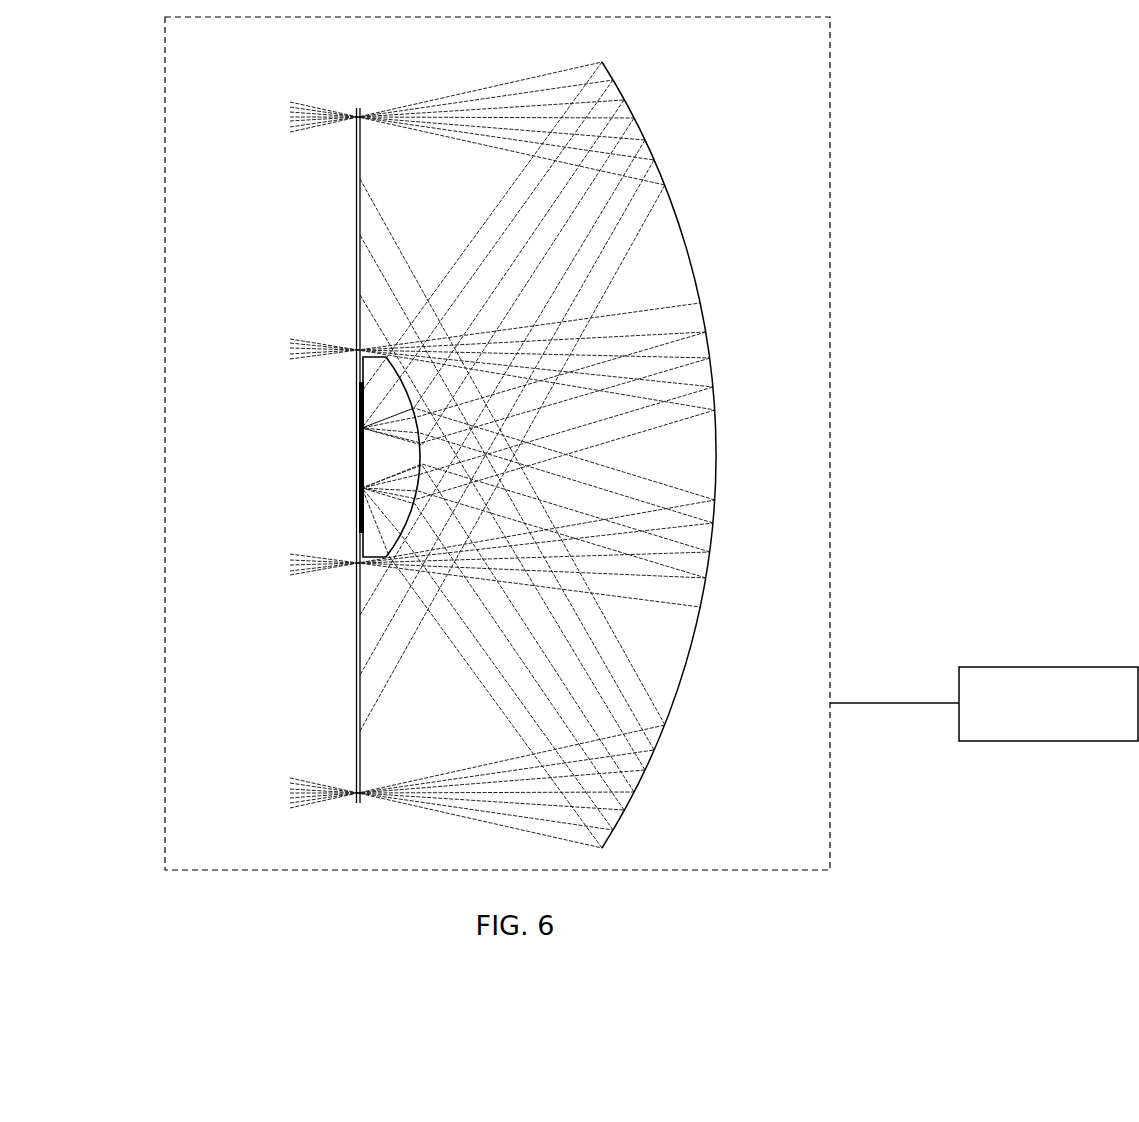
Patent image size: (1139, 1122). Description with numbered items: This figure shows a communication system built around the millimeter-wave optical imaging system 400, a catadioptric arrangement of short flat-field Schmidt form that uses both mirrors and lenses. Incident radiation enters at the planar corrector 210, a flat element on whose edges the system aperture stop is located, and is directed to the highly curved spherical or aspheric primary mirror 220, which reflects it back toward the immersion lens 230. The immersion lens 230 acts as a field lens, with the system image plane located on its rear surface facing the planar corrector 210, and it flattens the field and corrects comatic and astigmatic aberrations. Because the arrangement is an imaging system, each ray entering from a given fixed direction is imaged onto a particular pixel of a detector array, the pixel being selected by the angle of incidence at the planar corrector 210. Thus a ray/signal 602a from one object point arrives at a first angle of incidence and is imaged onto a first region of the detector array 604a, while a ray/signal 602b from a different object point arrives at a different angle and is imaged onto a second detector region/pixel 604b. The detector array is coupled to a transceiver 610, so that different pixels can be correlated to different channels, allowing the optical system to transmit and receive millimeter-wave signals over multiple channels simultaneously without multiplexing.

The optical imaging system 400 is at (831, 188).
The ray/signal 602a is at (326, 112).
The ray/signal 602b is at (330, 124).
The immersion lens 230 is at (380, 350).
The primary mirror 220 is at (712, 462).
The planar corrector 210 is at (355, 695).
The first region of the detector array 604a is at (356, 502).
The second detector region/pixel 604b is at (356, 408).
The transceiver 610 is at (1030, 665).